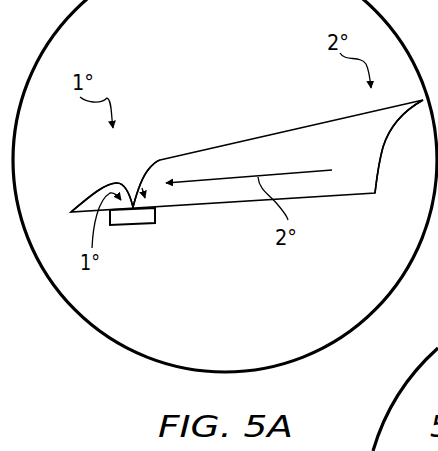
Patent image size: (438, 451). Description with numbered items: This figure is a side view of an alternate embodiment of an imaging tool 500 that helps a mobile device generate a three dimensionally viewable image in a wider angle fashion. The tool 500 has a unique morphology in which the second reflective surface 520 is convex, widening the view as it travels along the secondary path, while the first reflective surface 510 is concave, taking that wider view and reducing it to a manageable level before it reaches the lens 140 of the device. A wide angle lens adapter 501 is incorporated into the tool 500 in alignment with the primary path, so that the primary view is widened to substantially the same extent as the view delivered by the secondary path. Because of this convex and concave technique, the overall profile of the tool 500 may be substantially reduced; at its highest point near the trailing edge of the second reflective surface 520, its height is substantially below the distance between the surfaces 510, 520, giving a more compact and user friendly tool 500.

The imaging tool 500 is at (231, 80).
The wide angle lens adapter 501 is at (88, 185).
The first reflective surface 510 is at (165, 162).
The second reflective surface 520 is at (387, 133).
The lens 140 is at (137, 223).